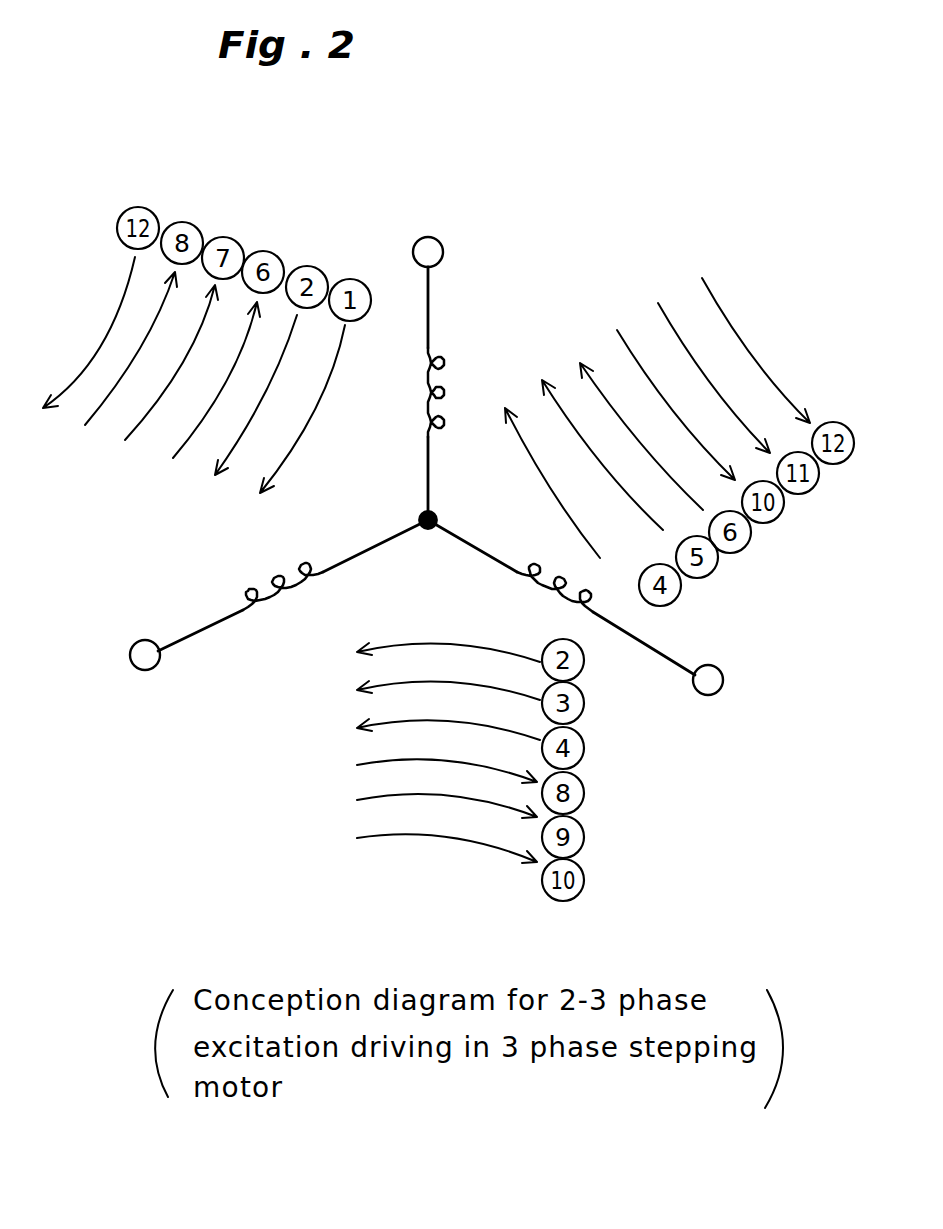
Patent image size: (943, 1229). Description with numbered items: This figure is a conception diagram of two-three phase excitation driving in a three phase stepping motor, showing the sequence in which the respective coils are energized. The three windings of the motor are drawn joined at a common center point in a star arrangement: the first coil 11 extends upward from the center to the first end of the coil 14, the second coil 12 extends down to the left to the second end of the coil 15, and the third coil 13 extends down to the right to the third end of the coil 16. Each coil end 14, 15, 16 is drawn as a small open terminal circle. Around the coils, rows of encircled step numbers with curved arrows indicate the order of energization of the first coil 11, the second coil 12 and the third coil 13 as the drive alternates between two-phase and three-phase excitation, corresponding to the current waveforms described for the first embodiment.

The first coil 11 is at (445, 375).
The second coil 12 is at (277, 603).
The third coil 13 is at (582, 603).
The first end of the coil 14 is at (442, 238).
The second end of the coil 15 is at (132, 668).
The third end of the coil 16 is at (723, 681).